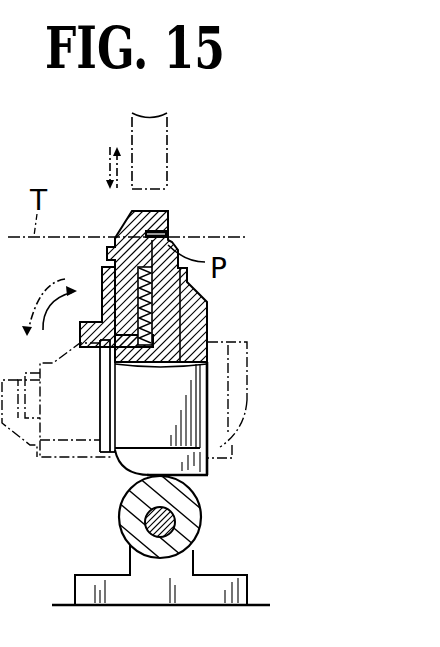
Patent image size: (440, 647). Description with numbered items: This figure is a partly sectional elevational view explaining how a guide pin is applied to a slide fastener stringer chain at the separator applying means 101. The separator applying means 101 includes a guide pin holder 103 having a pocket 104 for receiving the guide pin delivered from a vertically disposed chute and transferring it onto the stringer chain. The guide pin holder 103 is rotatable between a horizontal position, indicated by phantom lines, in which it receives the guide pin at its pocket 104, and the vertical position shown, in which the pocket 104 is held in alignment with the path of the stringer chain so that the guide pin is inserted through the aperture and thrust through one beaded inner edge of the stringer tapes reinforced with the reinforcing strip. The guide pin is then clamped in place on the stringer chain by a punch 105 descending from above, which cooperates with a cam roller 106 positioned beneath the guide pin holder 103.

The separator applying means 101 is at (95, 183).
The guide pin holder 103 is at (193, 435).
The pocket 104 is at (168, 219).
The punch 105 is at (167, 152).
The cam roller 106 is at (200, 525).